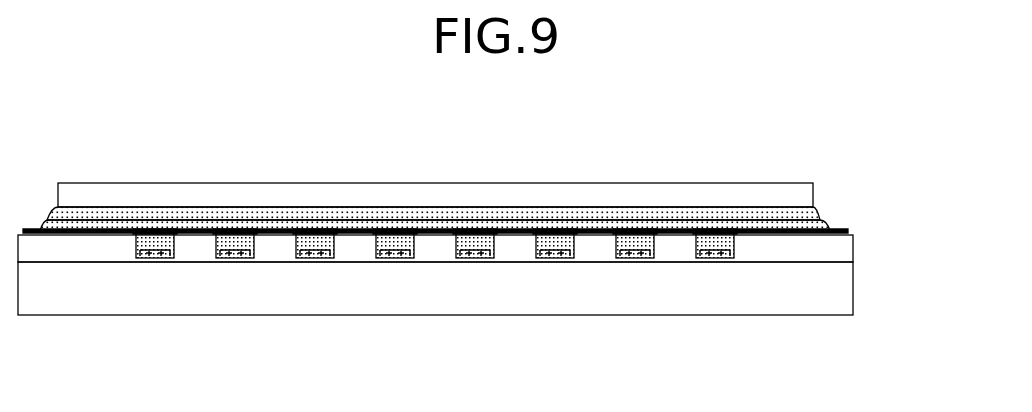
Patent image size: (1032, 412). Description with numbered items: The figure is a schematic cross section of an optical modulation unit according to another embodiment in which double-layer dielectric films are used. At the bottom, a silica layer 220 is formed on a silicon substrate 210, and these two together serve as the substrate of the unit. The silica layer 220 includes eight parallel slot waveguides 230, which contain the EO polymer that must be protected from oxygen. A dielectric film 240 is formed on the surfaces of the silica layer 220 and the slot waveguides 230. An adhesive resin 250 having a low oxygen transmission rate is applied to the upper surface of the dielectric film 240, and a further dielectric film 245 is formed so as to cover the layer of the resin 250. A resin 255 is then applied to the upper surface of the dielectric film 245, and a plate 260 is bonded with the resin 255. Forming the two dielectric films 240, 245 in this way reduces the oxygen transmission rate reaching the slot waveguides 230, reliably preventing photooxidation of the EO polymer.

The silicon substrate 210 is at (855, 285).
The silica layer 220 is at (855, 245).
The slot waveguides 230 is at (576, 243).
The dielectric film 240 is at (780, 237).
The dielectric film 245 is at (723, 220).
The adhesive resin 250 is at (827, 221).
The resin 255 is at (792, 210).
The plate 260 is at (643, 183).